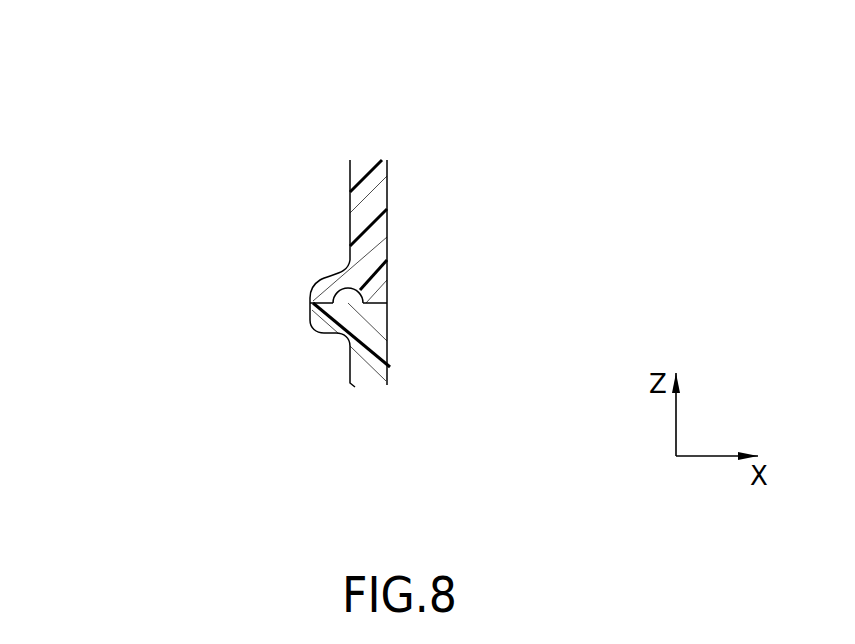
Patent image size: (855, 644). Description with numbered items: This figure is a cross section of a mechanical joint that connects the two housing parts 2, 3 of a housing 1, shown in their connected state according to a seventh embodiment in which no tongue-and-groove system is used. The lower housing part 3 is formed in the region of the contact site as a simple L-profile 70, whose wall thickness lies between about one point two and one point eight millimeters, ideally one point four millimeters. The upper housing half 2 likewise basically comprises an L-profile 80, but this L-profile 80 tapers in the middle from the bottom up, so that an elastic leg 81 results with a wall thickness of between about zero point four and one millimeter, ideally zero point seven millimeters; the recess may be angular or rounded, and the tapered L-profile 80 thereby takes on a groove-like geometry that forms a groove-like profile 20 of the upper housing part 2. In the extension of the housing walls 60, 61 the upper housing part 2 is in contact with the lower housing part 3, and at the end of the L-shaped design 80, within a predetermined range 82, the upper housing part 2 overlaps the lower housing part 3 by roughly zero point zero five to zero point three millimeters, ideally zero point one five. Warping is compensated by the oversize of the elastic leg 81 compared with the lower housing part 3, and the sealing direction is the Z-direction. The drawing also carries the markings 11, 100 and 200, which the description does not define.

The housing 1 is at (127, 92).
The upper housing part 2 is at (367, 130).
The lower housing part 3 is at (368, 412).
The outer surface side 11 is at (495, 280).
The groove-like profile 20 is at (325, 262).
The housing wall 60 is at (368, 363).
The housing wall 61 is at (365, 220).
The L-profile 70 is at (327, 357).
The L-profile 80 is at (392, 287).
The elastic leg 81 is at (322, 293).
The predetermined range 82 is at (326, 304).
The outward direction 100 is at (640, 310).
The inward direction 200 is at (42, 308).